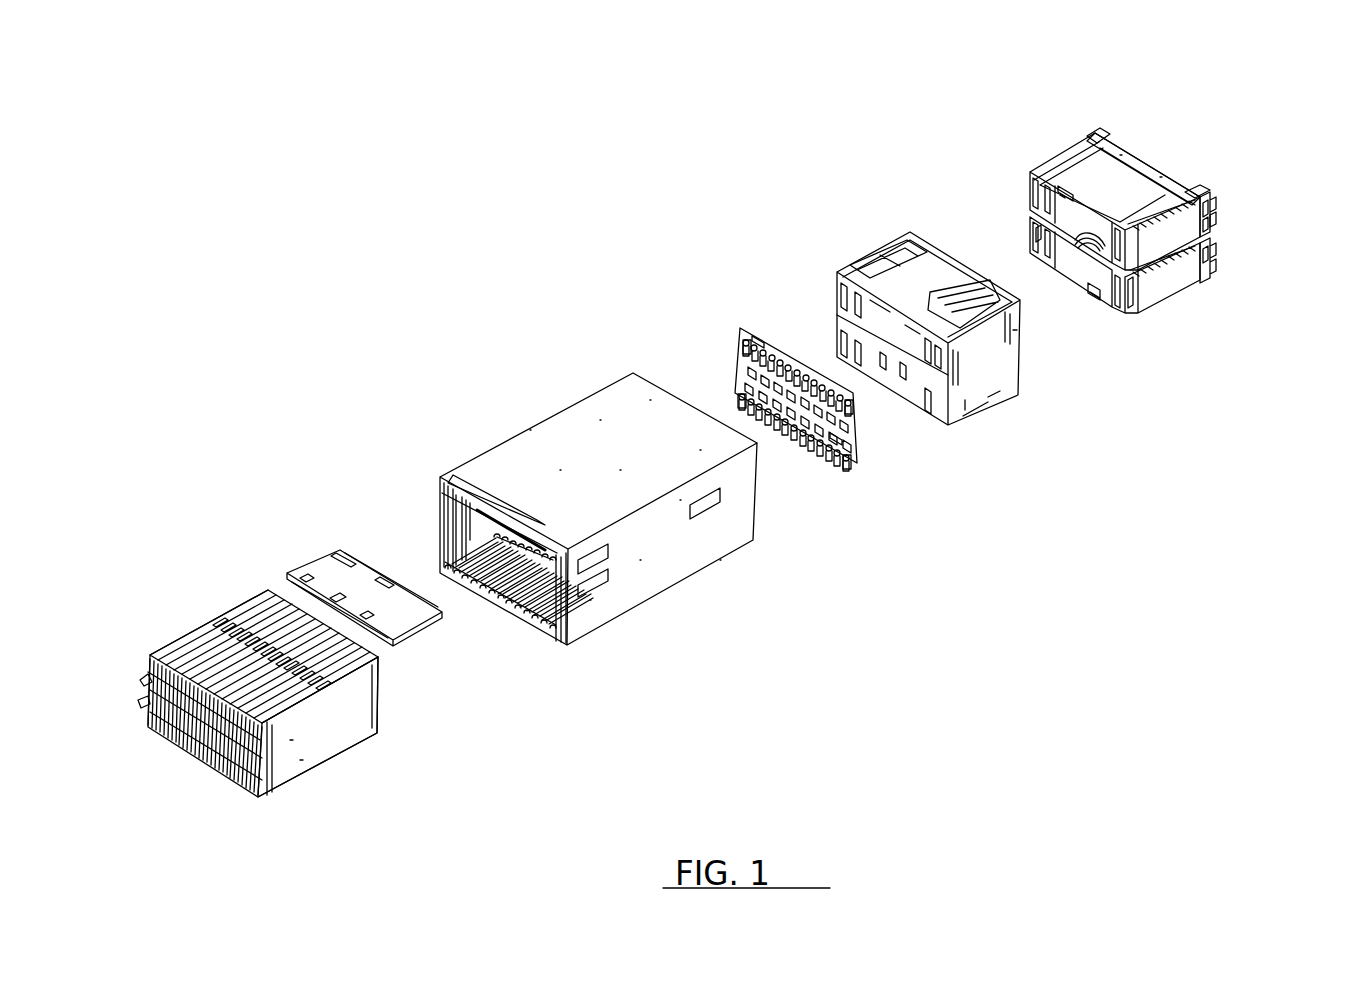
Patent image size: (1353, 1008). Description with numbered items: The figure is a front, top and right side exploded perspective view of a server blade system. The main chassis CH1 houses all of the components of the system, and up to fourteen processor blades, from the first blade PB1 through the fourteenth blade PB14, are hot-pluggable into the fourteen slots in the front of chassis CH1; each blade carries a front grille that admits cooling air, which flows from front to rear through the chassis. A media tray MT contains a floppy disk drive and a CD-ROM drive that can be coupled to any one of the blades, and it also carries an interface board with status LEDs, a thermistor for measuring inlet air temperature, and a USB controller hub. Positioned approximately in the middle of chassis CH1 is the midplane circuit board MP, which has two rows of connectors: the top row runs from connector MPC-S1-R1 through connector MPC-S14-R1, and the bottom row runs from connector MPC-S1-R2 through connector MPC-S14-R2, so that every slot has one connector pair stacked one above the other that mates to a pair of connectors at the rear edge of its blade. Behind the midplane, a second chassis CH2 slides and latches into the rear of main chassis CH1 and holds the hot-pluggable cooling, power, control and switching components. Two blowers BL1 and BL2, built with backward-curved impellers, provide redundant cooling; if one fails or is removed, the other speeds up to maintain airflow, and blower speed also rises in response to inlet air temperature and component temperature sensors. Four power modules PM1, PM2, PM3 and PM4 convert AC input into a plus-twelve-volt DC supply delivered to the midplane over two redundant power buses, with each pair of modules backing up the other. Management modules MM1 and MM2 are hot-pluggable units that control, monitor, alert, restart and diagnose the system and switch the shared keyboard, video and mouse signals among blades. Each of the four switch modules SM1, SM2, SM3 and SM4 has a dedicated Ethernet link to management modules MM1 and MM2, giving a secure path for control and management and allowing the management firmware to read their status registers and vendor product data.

The processor blade PB1 is at (215, 625).
The processor blade PB14 is at (290, 770).
The media tray MT is at (320, 550).
The main chassis CH1 is at (525, 440).
The midplane circuit board MP is at (745, 325).
The midplane connector MPC-S1-R1 is at (740, 345).
The midplane connector MPC-S1-R2 is at (735, 395).
The midplane connector MPC-S14-R1 is at (855, 413).
The midplane connector MPC-S14-R2 is at (857, 463).
The chassis CH2 is at (870, 255).
The management module MM1 is at (1100, 130).
The management module MM2 is at (1028, 205).
The power module PM1 is at (1115, 140).
The power module PM2 is at (1040, 258).
The power module PM3 is at (1195, 190).
The power module PM4 is at (1105, 300).
The blower BL1 is at (1150, 170).
The blower BL2 is at (1075, 275).
The switch module SM1 is at (1205, 192).
The switch module SM2 is at (1215, 212).
The switch module SM3 is at (1123, 312).
The switch module SM4 is at (1185, 282).